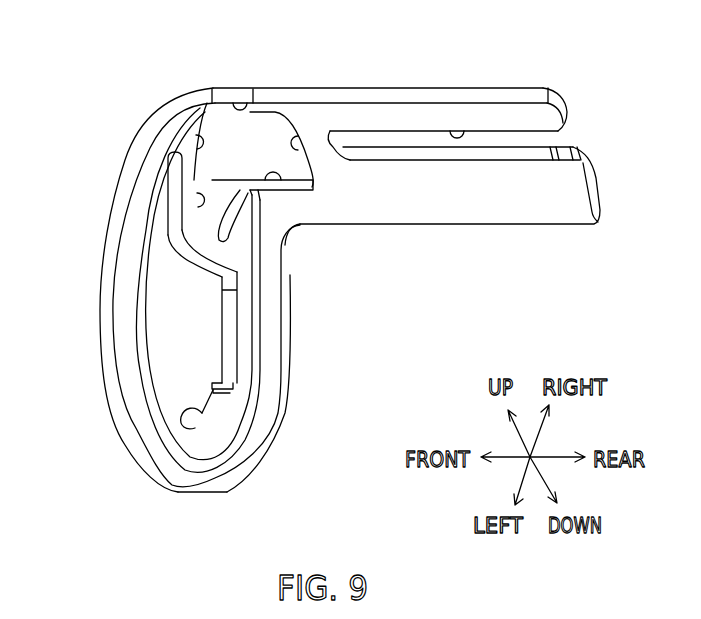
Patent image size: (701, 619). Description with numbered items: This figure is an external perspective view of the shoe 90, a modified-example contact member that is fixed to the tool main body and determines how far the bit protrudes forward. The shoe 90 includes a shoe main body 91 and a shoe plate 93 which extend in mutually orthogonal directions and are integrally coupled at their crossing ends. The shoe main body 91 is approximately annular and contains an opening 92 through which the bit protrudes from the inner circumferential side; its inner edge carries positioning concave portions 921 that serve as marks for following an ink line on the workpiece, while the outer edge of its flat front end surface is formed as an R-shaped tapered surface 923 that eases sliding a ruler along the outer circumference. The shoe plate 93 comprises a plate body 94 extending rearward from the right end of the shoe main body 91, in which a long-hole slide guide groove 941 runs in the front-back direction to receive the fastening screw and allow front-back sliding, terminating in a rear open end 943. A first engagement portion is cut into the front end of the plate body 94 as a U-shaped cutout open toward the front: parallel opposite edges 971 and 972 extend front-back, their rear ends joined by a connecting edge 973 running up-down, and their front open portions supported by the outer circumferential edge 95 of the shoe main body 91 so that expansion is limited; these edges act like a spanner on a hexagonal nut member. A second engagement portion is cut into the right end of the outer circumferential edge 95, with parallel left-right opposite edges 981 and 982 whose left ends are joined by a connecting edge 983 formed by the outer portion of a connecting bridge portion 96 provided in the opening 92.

The shoe 90 is at (466, 247).
The shoe main body 91 is at (120, 324).
The opening 92 is at (177, 420).
The shoe plate 93 is at (415, 117).
The plate body 94 is at (432, 203).
The outer circumferential edge 95 is at (147, 150).
The connecting bridge portion 96 is at (158, 236).
The positioning concave portion 921 is at (225, 382).
The tapered surface 923 is at (105, 382).
The slide guide groove 941 is at (467, 132).
The rear open end 943 is at (560, 131).
The opposite edge 971 is at (236, 96).
The opposite edge 972 is at (290, 192).
The connecting edge 973 is at (307, 153).
The opposite edge 981 is at (177, 125).
The opposite edge 982 is at (228, 224).
The connecting edge 983 is at (205, 185).